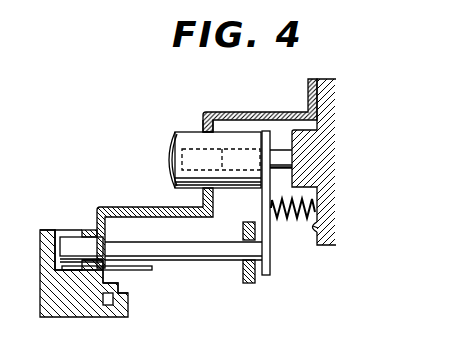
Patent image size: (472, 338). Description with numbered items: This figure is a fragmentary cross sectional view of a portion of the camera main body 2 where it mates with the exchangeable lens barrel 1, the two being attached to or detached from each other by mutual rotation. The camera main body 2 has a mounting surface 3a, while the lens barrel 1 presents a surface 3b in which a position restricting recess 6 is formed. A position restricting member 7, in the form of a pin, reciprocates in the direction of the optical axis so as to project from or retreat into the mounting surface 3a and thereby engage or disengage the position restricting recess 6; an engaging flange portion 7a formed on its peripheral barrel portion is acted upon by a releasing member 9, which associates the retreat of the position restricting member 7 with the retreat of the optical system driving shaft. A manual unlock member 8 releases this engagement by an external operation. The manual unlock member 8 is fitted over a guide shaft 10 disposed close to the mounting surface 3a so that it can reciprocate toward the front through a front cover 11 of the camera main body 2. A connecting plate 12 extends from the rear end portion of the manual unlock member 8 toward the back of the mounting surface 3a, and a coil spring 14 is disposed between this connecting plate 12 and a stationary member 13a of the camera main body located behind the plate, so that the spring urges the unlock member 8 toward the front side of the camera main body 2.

The exchangeable lens barrel 1 is at (99, 321).
The camera main body 2 is at (265, 108).
The mounting surface 3a is at (53, 267).
The surface of the exchangeable lens barrel 3b is at (109, 283).
The position restricting recess 6 is at (58, 232).
The position restricting member 7 is at (72, 231).
The engaging flange portion 7a is at (112, 231).
The manual unlock member 8 is at (177, 133).
The releasing member 9 is at (152, 270).
The guide shaft 10 is at (286, 152).
The front cover 11 is at (206, 129).
The connecting plate 12 is at (270, 232).
The stationary member 13a is at (320, 236).
The coil spring 14 is at (300, 225).